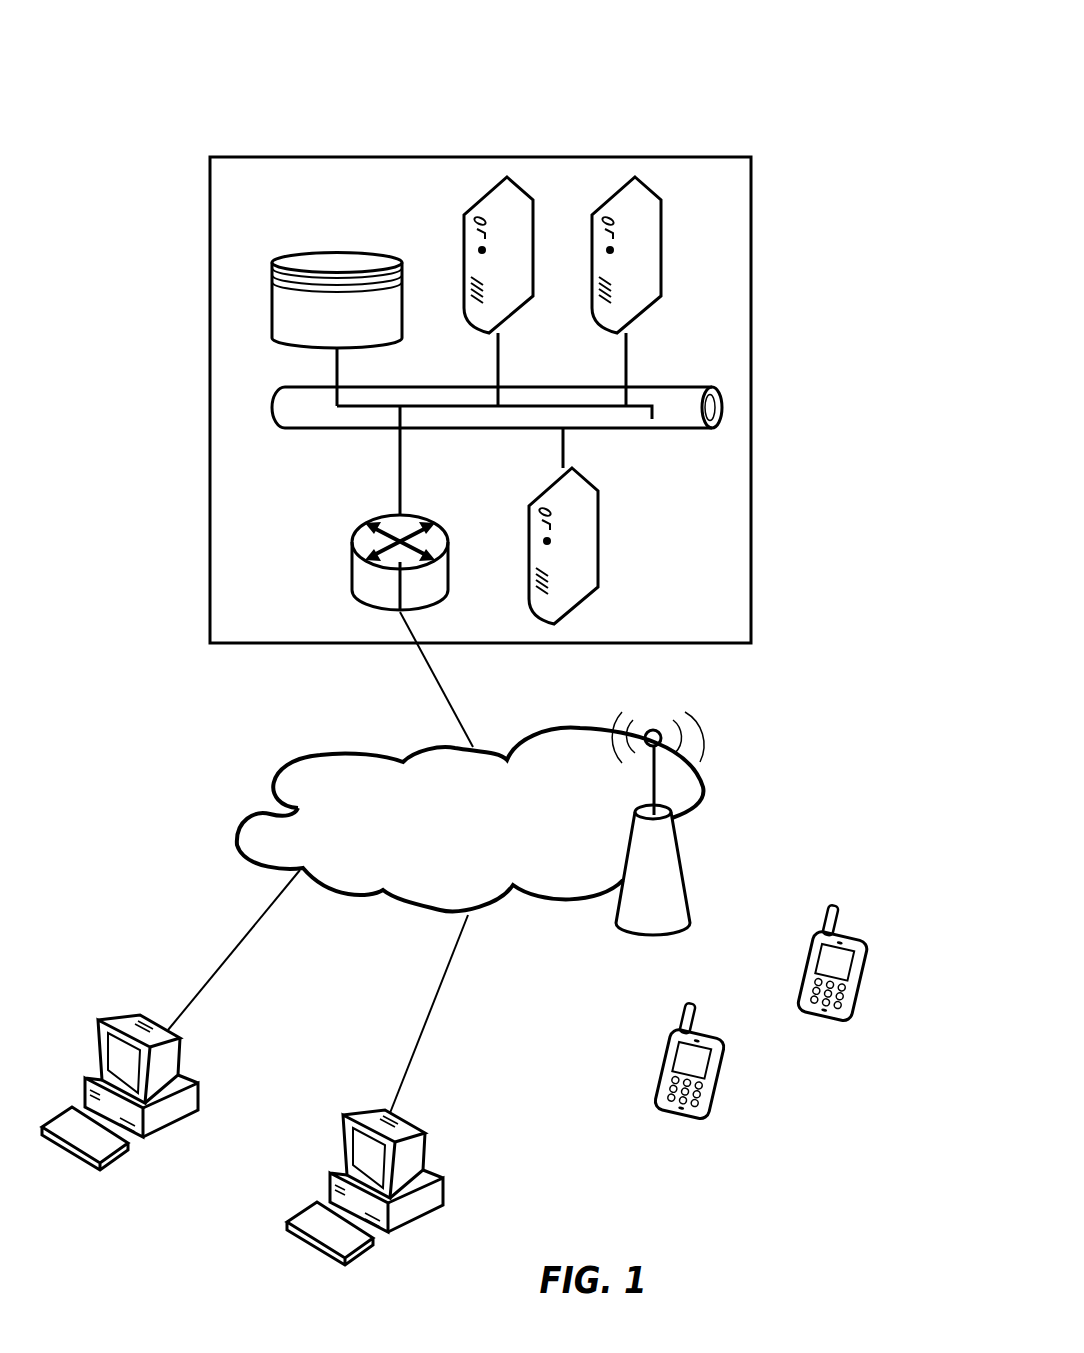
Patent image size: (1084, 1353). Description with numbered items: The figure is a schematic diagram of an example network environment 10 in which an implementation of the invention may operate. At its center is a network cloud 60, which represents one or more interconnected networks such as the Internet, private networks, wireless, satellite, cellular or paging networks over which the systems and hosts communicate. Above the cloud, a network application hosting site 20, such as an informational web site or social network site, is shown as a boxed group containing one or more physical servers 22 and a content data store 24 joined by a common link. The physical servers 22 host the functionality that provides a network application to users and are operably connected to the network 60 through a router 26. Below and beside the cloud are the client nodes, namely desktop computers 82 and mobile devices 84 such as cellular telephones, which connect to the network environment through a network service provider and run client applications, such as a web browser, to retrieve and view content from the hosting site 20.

The system 10 is at (744, 120).
The network application hosting site 20 is at (207, 415).
The physical servers 22 is at (465, 255).
The content data store 24 is at (340, 252).
The router 26 is at (352, 560).
The network cloud 60 is at (232, 826).
The desktop computer 82 is at (107, 1012).
The mobile devices 84 is at (880, 978).